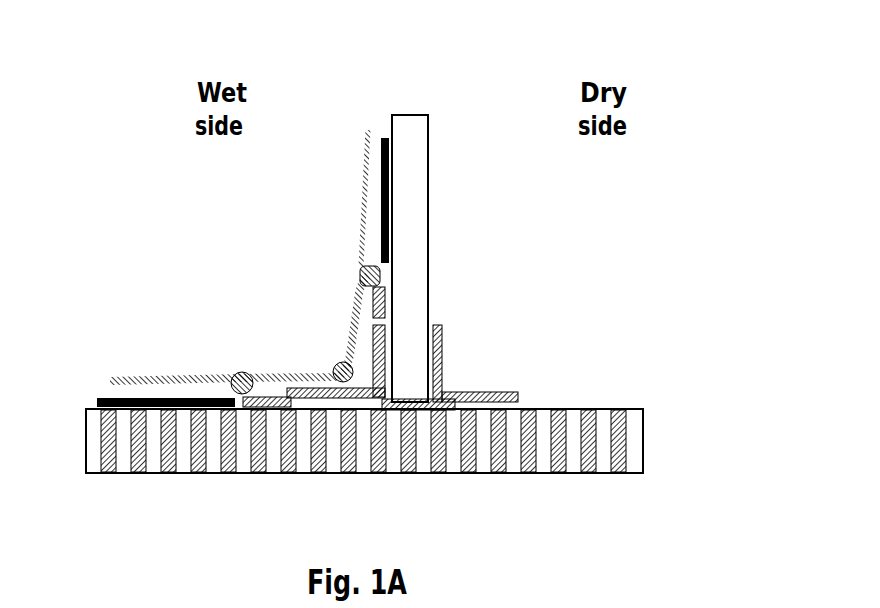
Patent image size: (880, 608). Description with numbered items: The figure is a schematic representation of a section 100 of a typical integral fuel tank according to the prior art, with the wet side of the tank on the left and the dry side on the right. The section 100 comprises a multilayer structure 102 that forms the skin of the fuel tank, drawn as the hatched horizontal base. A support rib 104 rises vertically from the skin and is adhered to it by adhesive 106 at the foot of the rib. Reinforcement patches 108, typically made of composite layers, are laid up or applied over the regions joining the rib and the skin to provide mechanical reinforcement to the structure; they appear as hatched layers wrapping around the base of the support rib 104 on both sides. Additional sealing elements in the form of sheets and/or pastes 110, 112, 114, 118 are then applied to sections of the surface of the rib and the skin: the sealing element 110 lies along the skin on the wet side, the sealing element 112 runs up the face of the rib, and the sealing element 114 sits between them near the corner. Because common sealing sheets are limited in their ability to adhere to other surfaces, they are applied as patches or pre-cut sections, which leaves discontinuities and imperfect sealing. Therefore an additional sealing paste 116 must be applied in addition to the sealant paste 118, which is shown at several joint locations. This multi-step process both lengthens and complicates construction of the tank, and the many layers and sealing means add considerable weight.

The section of the fuel tank 100 is at (106, 70).
The multilayer structure 102 is at (628, 449).
The support rib 104 is at (418, 232).
The adhesive 106 is at (400, 404).
The reinforcement patches 108 is at (380, 370).
The sealing element 110 is at (122, 405).
The sealing element 112 is at (388, 180).
The sealing element 114 is at (386, 296).
The additional sealing paste 116 is at (162, 378).
The sealant paste 118 is at (343, 370).